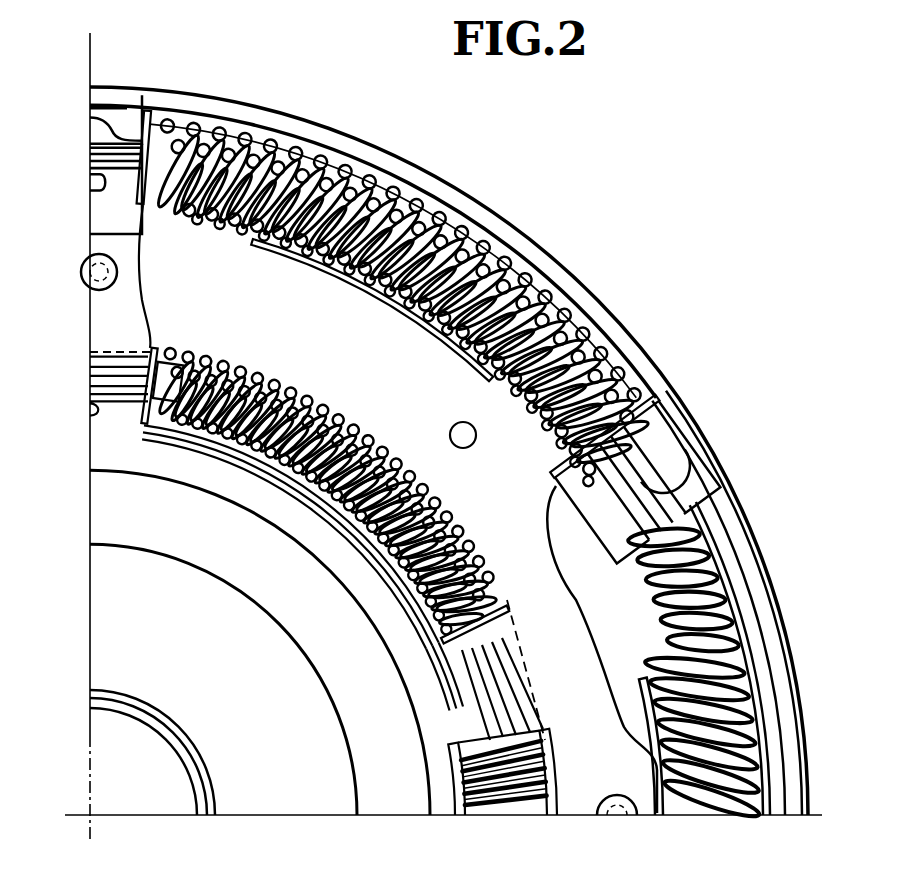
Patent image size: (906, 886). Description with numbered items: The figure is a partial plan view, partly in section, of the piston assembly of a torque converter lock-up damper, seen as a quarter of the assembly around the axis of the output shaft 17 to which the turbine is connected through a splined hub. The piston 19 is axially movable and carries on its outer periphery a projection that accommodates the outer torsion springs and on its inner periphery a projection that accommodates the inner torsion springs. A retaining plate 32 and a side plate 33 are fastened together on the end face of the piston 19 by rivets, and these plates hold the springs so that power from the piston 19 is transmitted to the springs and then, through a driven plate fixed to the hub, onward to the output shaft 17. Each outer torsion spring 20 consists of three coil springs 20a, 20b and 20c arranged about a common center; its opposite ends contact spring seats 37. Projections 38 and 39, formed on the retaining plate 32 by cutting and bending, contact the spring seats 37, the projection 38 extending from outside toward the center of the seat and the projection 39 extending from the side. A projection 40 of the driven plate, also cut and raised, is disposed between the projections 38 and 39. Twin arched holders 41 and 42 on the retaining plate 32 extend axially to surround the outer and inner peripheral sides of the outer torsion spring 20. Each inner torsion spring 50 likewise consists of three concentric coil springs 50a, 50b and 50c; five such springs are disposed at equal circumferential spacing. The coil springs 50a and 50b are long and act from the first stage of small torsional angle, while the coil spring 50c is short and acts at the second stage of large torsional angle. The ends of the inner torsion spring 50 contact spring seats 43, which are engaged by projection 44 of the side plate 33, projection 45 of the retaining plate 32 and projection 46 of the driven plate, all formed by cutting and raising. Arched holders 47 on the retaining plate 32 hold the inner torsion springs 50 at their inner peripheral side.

The output shaft 17 is at (92, 817).
The piston 19 is at (300, 127).
The outer torsion spring 20 is at (408, 265).
The coil spring 20a is at (347, 185).
The coil spring 20b is at (228, 140).
The coil spring 20c is at (500, 250).
The retaining plate 32 is at (740, 547).
The side plate 33 is at (650, 723).
The spring seat 37 is at (148, 203).
The projection 38 is at (128, 121).
The projection 39 is at (100, 190).
The projection 40 is at (90, 158).
The holder 41 is at (770, 656).
The holder 42 is at (396, 306).
The spring seat 43 is at (152, 352).
The projection 44 is at (90, 352).
The projection 45 is at (90, 412).
The projection 46 is at (90, 390).
The arched holder 47 is at (345, 537).
The inner torsion spring 50 is at (331, 477).
The coil spring 50a is at (170, 432).
The coil spring 50b is at (228, 370).
The coil spring 50c is at (335, 432).